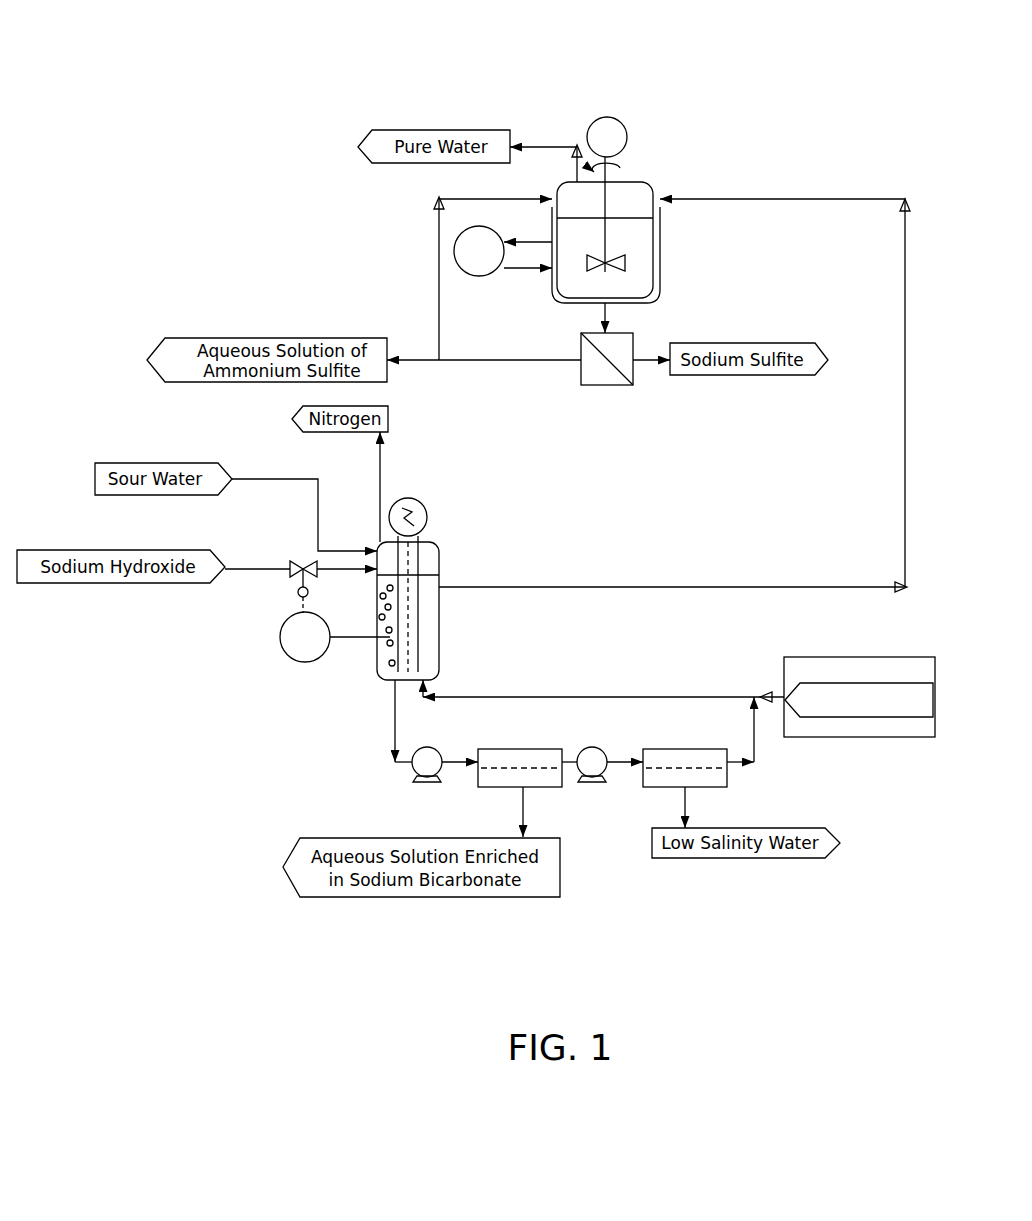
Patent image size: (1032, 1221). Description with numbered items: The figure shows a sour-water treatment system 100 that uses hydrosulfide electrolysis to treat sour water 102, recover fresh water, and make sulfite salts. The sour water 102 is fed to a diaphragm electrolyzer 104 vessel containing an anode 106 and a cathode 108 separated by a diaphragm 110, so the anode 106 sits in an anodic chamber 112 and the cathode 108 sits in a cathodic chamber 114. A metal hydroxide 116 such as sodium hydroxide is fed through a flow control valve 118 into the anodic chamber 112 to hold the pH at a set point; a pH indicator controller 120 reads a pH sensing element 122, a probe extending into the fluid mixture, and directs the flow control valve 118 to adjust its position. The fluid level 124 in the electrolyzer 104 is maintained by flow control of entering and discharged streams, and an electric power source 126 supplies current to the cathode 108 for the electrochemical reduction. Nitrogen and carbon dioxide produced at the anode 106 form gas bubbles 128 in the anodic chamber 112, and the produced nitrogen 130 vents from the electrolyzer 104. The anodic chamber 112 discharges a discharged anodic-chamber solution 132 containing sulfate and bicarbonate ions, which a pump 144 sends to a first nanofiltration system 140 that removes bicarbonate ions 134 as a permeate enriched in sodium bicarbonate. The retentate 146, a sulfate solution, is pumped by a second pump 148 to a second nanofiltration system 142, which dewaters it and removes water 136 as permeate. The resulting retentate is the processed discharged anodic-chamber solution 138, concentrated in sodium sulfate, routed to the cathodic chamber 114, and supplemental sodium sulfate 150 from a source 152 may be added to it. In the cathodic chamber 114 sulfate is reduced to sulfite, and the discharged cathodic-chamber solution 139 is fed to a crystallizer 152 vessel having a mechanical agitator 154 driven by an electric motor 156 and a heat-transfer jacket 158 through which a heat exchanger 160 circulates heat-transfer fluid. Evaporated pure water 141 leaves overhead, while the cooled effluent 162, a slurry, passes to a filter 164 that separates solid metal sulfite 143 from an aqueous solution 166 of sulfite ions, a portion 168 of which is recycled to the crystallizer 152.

The sour-water treatment system 100 is at (186, 43).
The sour water 102 is at (277, 477).
The diaphragm electrolyzer 104 is at (440, 545).
The anode 106 is at (390, 653).
The cathode 108 is at (425, 578).
The diaphragm 110 is at (418, 588).
The anodic chamber 112 is at (382, 678).
The cathodic chamber 114 is at (428, 613).
The metal hydroxide 116 is at (240, 572).
The flow control valve 118 is at (300, 562).
The pH indicator controller 120 is at (280, 652).
The pH sensing element 122 is at (395, 650).
The fluid level 124 is at (392, 570).
The electric power source 126 is at (416, 500).
The gas bubbles 128 is at (377, 618).
The produced nitrogen 130 is at (378, 470).
The discharged anodic-chamber solution 132 is at (393, 735).
The bicarbonate ions 134 is at (520, 800).
The water 136 is at (690, 805).
The processed discharged anodic-chamber solution 138 is at (757, 750).
The discharged cathodic-chamber solution 139 is at (640, 586).
The first nanofiltration system 140 is at (478, 772).
The pure water 141 is at (545, 146).
The second nanofiltration system 142 is at (650, 790).
The solid metal sulfite 143 is at (652, 362).
The pump 144 is at (412, 765).
The retentate 146 is at (575, 760).
The pump 148 is at (592, 748).
The supplemental sodium sulfate 150 is at (775, 695).
The crystallizer 152 is at (635, 182).
The mechanical agitator 154 is at (608, 240).
The electric motor 156 is at (615, 117).
The heat-transfer jacket 158 is at (665, 258).
The heat exchanger 160 is at (455, 248).
The discharged effluent 162 is at (610, 318).
The filter 164 is at (595, 388).
The aqueous solution of sulfite ions 166 is at (530, 362).
The recycled portion 168 is at (462, 272).